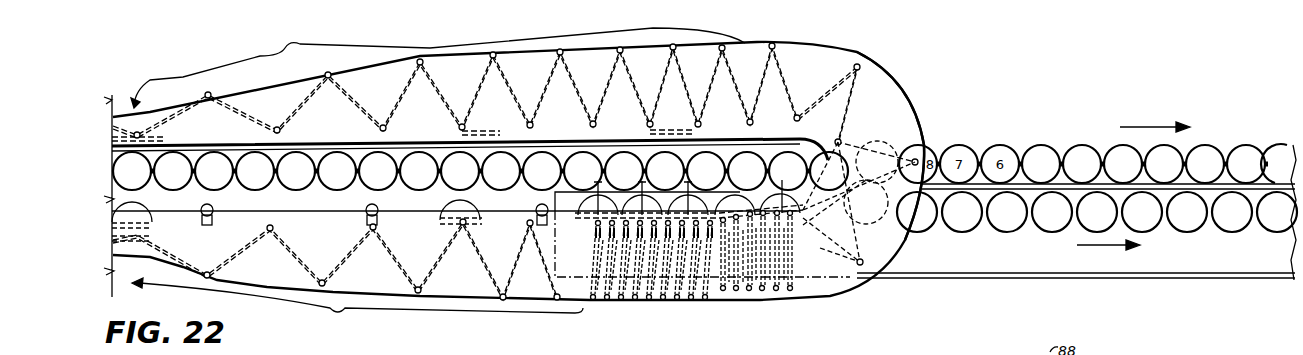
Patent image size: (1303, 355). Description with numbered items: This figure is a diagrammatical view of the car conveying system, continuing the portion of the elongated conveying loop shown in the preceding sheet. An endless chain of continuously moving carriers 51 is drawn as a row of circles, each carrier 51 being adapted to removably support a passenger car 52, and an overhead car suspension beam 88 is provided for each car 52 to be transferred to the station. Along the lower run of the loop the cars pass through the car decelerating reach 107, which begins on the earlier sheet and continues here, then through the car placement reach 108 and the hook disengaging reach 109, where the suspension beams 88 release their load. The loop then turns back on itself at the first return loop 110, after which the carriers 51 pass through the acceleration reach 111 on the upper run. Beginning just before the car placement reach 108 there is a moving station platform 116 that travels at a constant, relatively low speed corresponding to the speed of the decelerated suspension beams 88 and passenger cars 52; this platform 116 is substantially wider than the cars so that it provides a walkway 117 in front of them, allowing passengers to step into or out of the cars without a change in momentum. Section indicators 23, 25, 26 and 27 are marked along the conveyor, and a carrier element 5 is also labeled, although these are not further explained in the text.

The acceleration reach 111 is at (438, 67).
The first return loop 110 is at (896, 107).
The carrier 51 is at (290, 158).
The passenger car 52 is at (342, 157).
The carrier 5 is at (140, 210).
The overhead car suspension beam 88 is at (445, 236).
The car decelerating reach 107 is at (357, 308).
The car placement reach 108 is at (712, 314).
The hook disengaging reach 109 is at (800, 312).
The moving station platform 116 is at (957, 256).
The walkway 117 is at (1076, 281).
The section line 23 is at (600, 290).
The section line 25 is at (647, 290).
The section line 26 is at (782, 290).
The section line 27 is at (1187, 172).